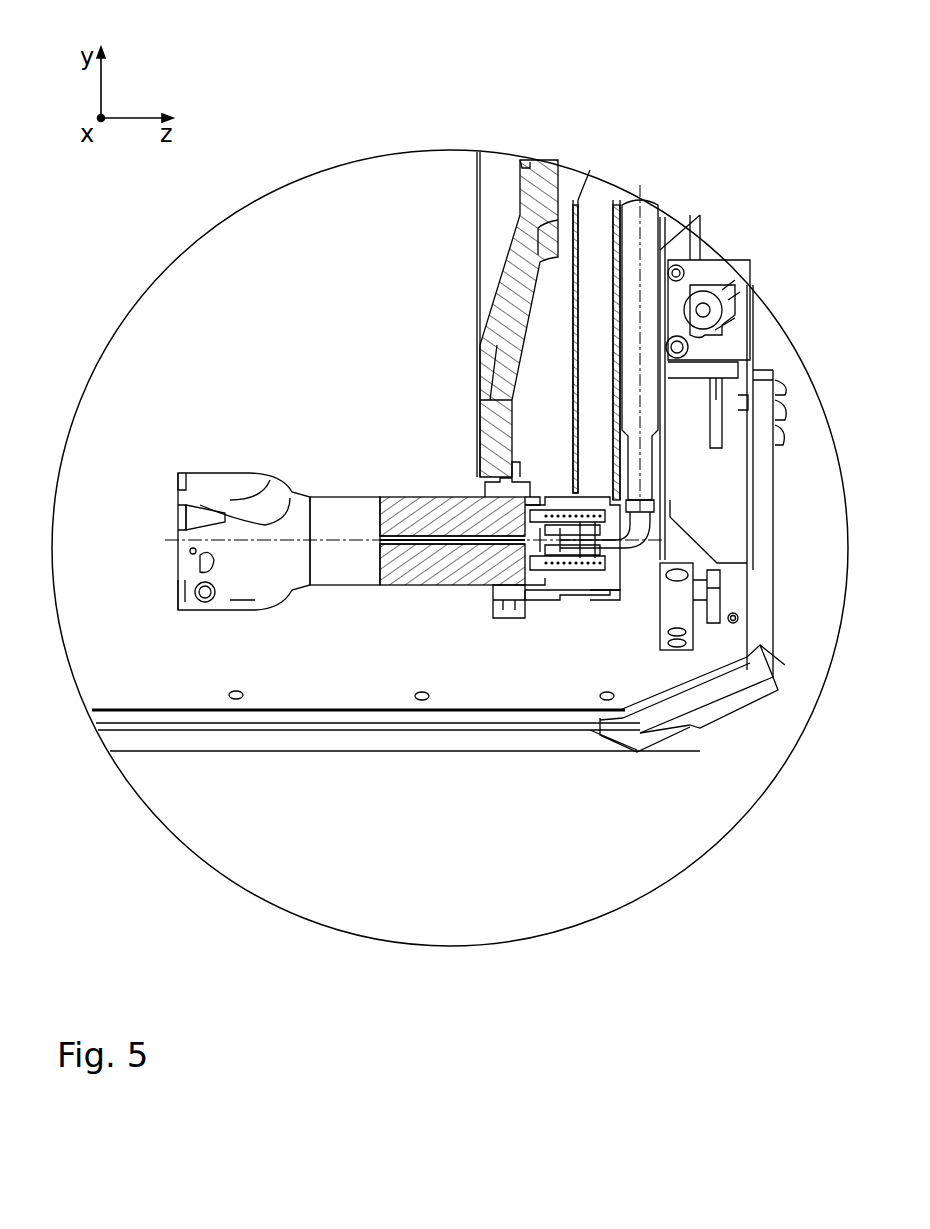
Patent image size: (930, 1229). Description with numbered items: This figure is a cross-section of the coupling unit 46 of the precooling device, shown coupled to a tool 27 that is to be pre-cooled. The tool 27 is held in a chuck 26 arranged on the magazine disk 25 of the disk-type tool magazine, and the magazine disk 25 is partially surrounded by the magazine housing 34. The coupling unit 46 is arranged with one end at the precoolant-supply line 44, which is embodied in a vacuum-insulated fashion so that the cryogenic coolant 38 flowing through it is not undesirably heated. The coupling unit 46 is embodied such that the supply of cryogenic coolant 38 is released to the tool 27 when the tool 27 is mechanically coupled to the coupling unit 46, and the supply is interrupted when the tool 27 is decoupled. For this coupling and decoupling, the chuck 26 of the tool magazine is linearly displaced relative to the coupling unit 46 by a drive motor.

The magazine disk 25 is at (527, 168).
The precoolant-supply line 44 is at (645, 205).
The magazine housing 34 is at (315, 740).
The tool 27 is at (340, 573).
The chuck 26 is at (503, 618).
The coupling unit 46 is at (600, 582).
The cryogenic coolant 38 is at (648, 517).